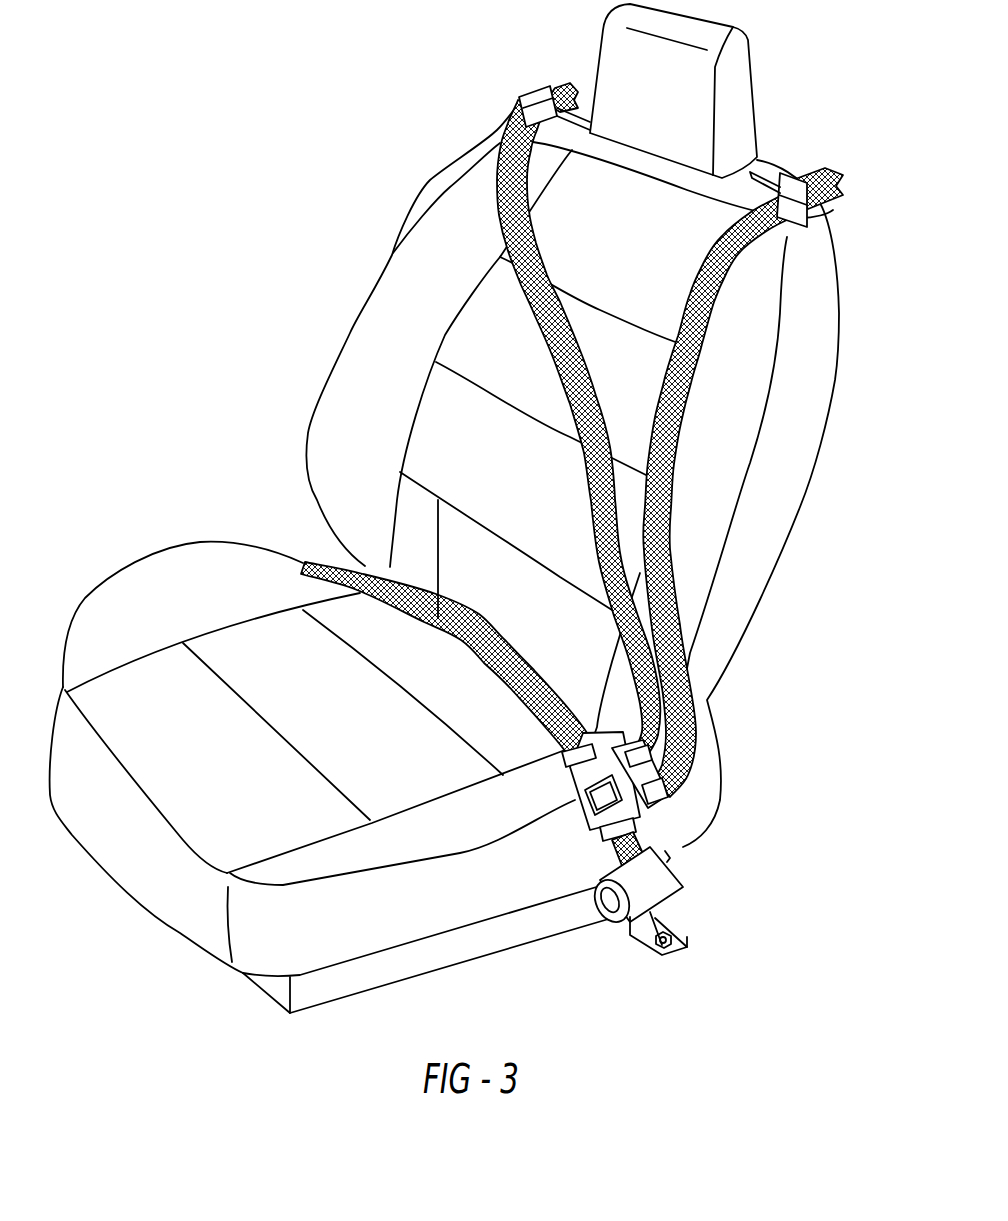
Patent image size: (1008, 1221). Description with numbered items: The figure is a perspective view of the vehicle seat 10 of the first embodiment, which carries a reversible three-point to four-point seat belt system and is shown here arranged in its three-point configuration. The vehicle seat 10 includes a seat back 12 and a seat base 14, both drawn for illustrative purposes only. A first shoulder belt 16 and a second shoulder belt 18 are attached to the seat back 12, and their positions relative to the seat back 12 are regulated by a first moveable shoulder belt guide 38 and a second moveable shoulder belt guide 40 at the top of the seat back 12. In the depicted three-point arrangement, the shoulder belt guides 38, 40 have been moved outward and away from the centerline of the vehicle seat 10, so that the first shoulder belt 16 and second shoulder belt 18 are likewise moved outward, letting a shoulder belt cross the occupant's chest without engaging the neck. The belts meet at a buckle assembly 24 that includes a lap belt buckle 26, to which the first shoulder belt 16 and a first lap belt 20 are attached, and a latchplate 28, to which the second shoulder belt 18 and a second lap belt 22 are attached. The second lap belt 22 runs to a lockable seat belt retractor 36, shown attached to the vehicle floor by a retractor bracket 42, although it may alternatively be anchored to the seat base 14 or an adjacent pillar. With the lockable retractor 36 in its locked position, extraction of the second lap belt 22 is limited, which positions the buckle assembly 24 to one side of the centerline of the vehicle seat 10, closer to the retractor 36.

The vehicle seat 10 is at (372, 108).
The seat back 12 is at (388, 300).
The seat base 14 is at (148, 603).
The first shoulder belt 16 is at (508, 202).
The second shoulder belt 18 is at (673, 418).
The first lap belt 20 is at (315, 558).
The second lap belt 22 is at (438, 500).
The buckle assembly 24 is at (568, 772).
The lap belt buckle 26 is at (590, 804).
The latchplate 28 is at (643, 820).
The lockable seat belt retractor 36 is at (667, 882).
The first moveable shoulder belt guide 38 is at (533, 98).
The second moveable shoulder belt guide 40 is at (792, 177).
The retractor bracket 42 is at (673, 937).